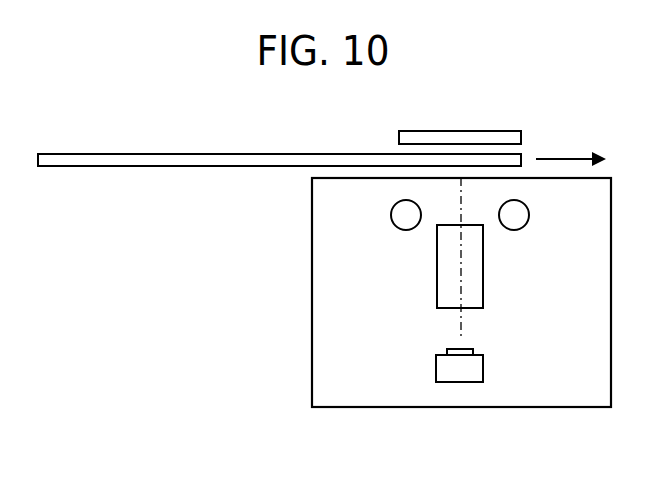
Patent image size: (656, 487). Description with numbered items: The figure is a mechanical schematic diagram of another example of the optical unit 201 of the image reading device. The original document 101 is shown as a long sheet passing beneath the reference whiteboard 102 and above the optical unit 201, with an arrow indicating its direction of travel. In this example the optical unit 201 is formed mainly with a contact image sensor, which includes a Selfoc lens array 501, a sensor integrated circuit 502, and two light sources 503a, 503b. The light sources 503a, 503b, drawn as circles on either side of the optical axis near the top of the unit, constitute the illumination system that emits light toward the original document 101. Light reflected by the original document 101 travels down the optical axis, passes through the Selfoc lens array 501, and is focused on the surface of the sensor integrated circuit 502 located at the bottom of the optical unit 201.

The original document 101 is at (165, 154).
The reference whiteboard 102 is at (488, 131).
The optical unit 201 is at (537, 407).
The Selfoc lens array 501 is at (484, 265).
The sensor integrated circuit 502 is at (484, 368).
The light source 503a is at (391, 215).
The light source 503b is at (530, 215).